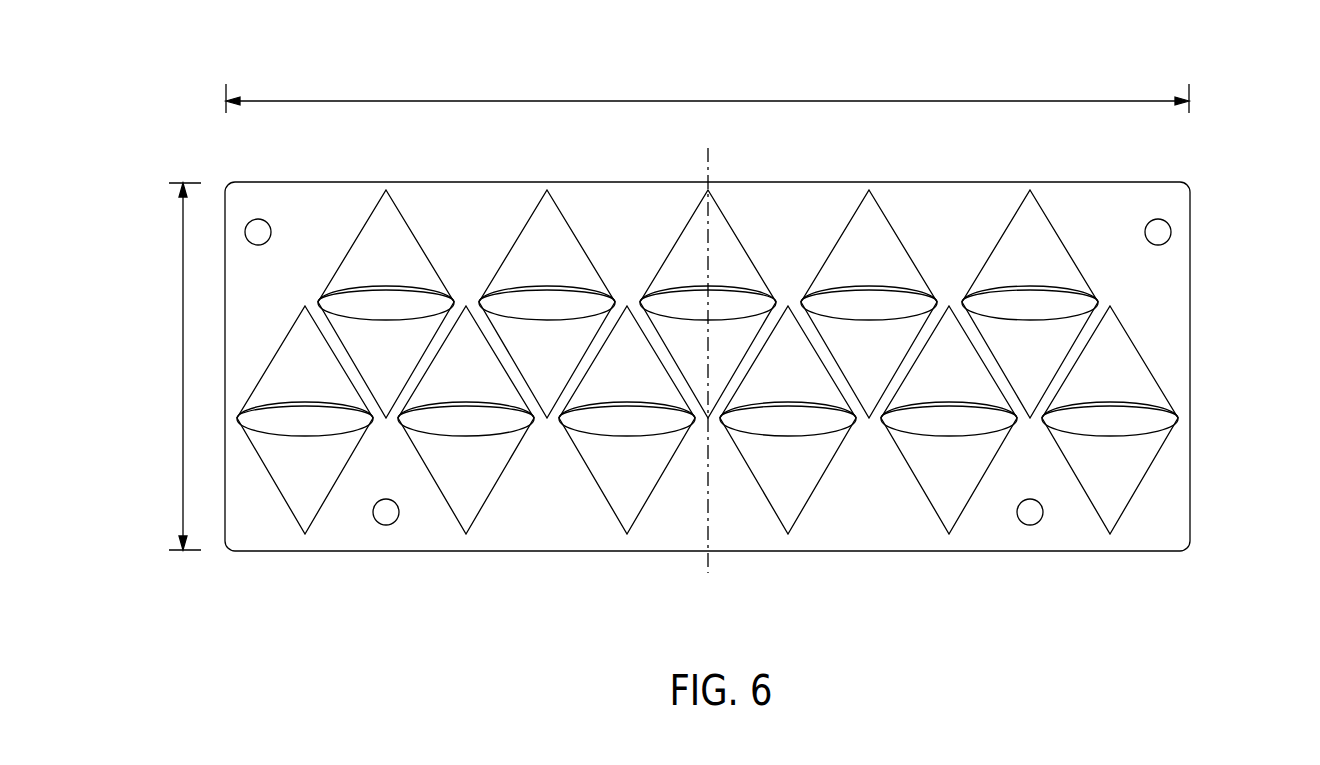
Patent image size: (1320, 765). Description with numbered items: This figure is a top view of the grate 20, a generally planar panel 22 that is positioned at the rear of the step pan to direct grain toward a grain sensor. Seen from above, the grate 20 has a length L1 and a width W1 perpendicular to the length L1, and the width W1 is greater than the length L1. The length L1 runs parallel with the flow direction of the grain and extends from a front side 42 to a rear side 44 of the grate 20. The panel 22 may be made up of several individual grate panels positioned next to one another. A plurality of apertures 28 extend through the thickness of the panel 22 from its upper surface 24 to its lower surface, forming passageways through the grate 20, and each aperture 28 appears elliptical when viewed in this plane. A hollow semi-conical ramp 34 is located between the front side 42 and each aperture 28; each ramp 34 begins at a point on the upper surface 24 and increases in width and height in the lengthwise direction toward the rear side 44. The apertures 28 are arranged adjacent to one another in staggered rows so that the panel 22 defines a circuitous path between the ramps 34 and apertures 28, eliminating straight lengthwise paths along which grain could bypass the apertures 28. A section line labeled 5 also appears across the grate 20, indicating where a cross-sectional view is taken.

The grate 20 is at (753, 370).
The planar panel 22 is at (1168, 268).
The upper surface 24 is at (1168, 207).
The aperture 28 is at (400, 292).
The hollow semi-conical ramp 34 is at (883, 250).
The front side 42 is at (760, 182).
The rear side 44 is at (885, 551).
The section line 5- 5 is at (708, 148).
The width W1 is at (687, 101).
The length L1 is at (183, 310).